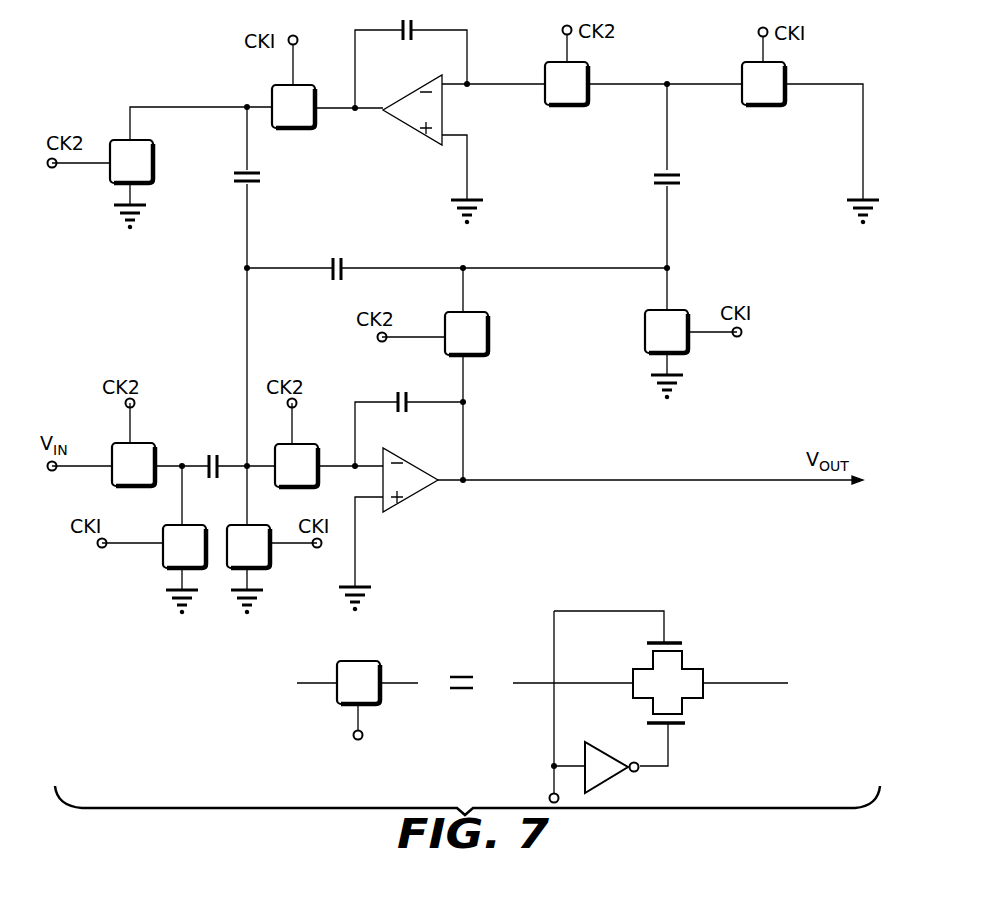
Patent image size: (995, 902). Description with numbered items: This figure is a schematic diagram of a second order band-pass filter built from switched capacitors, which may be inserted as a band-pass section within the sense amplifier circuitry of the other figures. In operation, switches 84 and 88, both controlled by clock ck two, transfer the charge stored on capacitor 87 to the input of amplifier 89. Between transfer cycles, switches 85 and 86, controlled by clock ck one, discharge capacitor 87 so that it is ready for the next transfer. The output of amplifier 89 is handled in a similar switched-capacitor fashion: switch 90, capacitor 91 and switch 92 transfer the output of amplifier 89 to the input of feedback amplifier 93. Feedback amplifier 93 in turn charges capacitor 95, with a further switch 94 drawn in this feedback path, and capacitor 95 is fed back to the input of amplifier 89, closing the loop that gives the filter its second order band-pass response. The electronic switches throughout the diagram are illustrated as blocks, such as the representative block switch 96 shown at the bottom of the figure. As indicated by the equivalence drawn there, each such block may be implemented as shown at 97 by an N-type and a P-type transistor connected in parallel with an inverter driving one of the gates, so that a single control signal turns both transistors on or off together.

The switch 84 is at (147, 444).
The switch 85 is at (188, 525).
The switch 86 is at (258, 525).
The capacitor 87 is at (213, 455).
The switch 88 is at (309, 445).
The amplifier 89 is at (410, 499).
The switch 90 is at (489, 327).
The capacitor 91 is at (680, 186).
The switch 92 is at (591, 75).
The feedback amplifier 93 is at (414, 70).
The switch 94 is at (304, 88).
The capacitor 95 is at (260, 183).
The electronic switch 96 is at (381, 668).
The N-type and P-type transistor switch implementation 97 is at (686, 629).